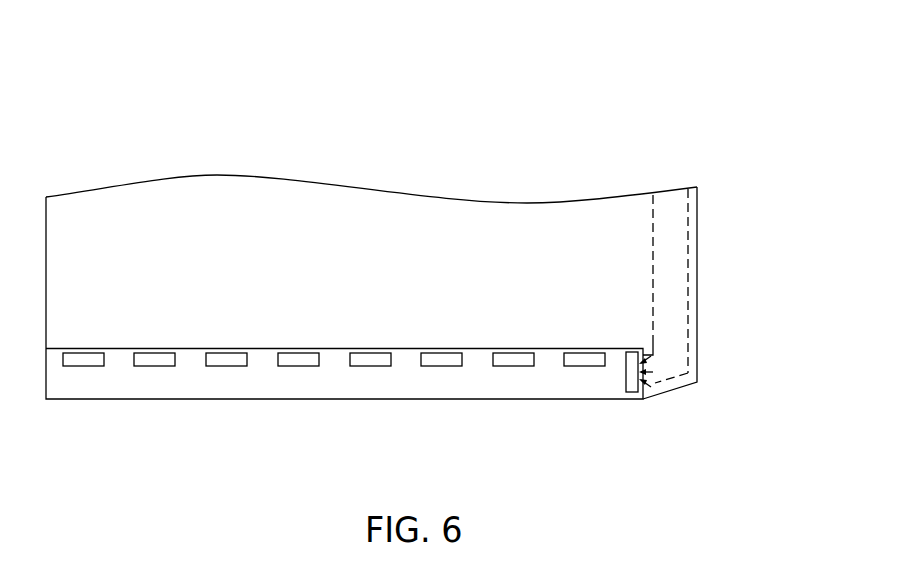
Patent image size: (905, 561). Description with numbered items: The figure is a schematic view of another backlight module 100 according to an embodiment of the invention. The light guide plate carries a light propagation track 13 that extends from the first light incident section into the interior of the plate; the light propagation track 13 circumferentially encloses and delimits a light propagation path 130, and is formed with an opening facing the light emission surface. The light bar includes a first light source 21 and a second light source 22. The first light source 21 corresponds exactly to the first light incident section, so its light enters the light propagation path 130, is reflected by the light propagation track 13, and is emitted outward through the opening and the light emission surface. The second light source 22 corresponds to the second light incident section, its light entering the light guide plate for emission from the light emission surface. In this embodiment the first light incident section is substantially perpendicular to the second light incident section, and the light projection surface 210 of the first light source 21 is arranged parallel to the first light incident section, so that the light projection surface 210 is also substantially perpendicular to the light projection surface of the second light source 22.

The backlight module 100 is at (302, 97).
The light propagation track 13 is at (687, 280).
The light propagation path 130 is at (670, 240).
The second light source 22 is at (372, 363).
The first light source 21 is at (635, 373).
The light projection surface 210 is at (640, 383).